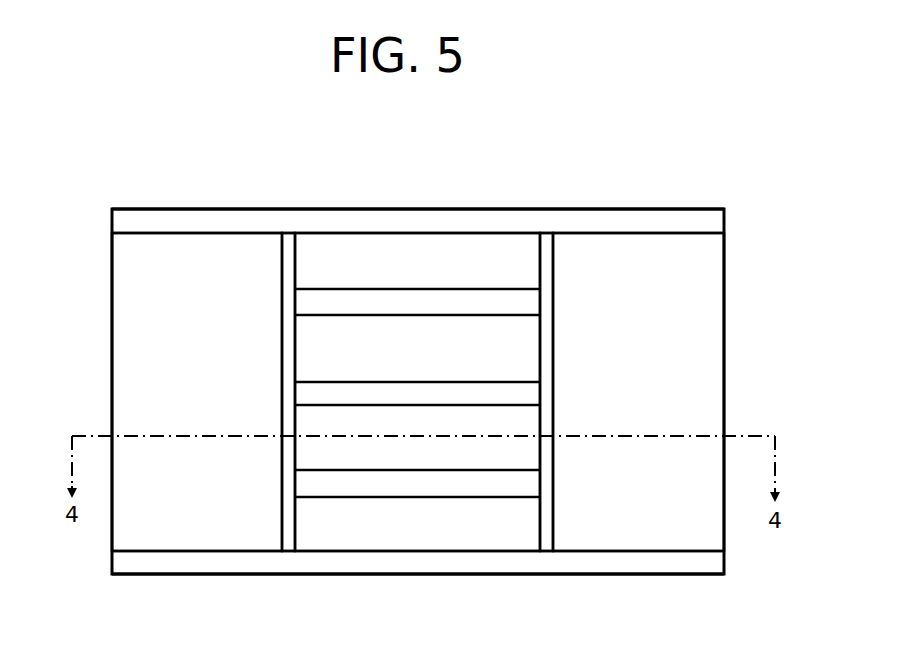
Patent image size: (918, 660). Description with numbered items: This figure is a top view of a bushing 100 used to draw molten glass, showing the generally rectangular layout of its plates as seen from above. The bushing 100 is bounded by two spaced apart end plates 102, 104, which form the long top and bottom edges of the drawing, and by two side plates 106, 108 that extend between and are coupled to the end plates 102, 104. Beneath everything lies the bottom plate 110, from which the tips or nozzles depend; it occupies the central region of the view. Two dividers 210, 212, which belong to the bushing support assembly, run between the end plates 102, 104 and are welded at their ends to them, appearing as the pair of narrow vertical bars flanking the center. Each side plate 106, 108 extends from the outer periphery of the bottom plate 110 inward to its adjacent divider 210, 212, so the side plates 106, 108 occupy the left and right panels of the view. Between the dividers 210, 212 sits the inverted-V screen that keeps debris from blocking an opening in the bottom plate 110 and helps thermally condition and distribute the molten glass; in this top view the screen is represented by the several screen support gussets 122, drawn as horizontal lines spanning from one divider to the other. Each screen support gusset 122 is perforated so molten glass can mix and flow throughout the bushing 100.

The bushing 100 is at (223, 153).
The end plate 102 is at (475, 220).
The end plate 104 is at (550, 565).
The side plate 106 is at (135, 353).
The side plate 108 is at (700, 372).
The bottom plate 110 is at (372, 530).
The screen support gusset 122 is at (375, 298).
The divider 210 is at (287, 263).
The divider 212 is at (547, 275).